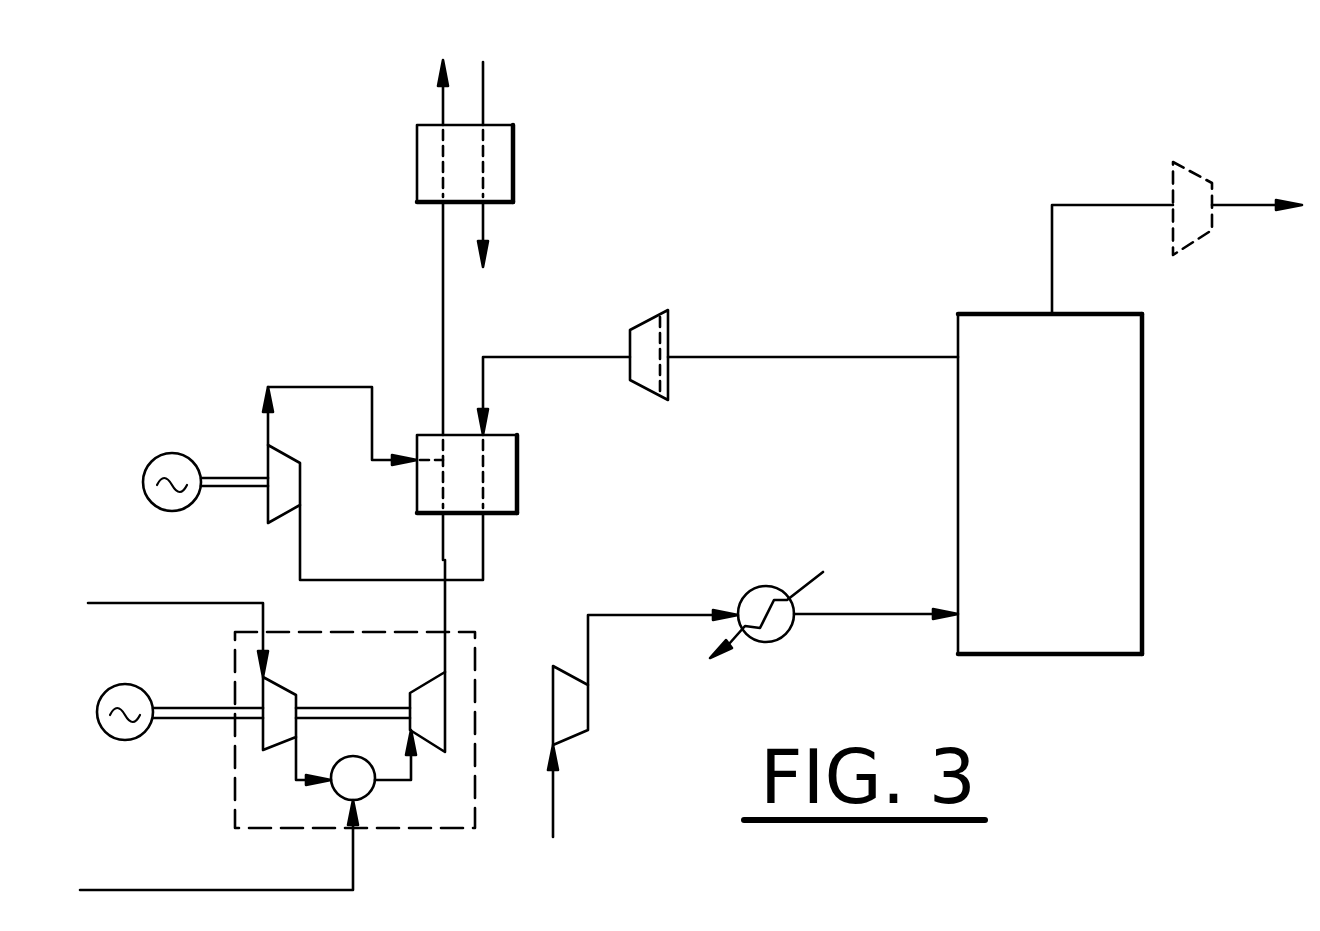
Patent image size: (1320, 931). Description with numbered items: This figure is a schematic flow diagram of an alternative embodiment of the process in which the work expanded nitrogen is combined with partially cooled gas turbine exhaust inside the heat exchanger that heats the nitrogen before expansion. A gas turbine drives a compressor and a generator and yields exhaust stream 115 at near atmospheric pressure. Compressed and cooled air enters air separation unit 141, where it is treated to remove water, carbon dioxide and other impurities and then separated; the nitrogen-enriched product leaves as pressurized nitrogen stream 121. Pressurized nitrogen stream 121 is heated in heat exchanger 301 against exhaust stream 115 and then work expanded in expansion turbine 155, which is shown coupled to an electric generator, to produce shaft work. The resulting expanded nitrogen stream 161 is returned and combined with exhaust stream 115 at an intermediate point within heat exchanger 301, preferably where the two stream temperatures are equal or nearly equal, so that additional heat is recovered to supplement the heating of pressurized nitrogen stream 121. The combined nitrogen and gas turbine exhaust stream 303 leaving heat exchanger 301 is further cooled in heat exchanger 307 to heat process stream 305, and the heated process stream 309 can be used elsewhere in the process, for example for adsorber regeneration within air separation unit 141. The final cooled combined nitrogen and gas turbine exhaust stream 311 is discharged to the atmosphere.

The exhaust stream 115 is at (445, 612).
The pressurized nitrogen stream 121 is at (572, 355).
The air separation unit 141 is at (1026, 656).
The expansion turbine 155 is at (302, 480).
The expanded nitrogen stream 161 is at (268, 420).
The heat exchanger 301 is at (517, 465).
The combined nitrogen and gas turbine exhaust stream 303 is at (443, 318).
The process stream 305 is at (483, 80).
The heat exchanger 307 is at (515, 154).
The heated process stream 309 is at (483, 227).
The final cooled combined nitrogen and gas turbine exhaust stream 311 is at (440, 98).